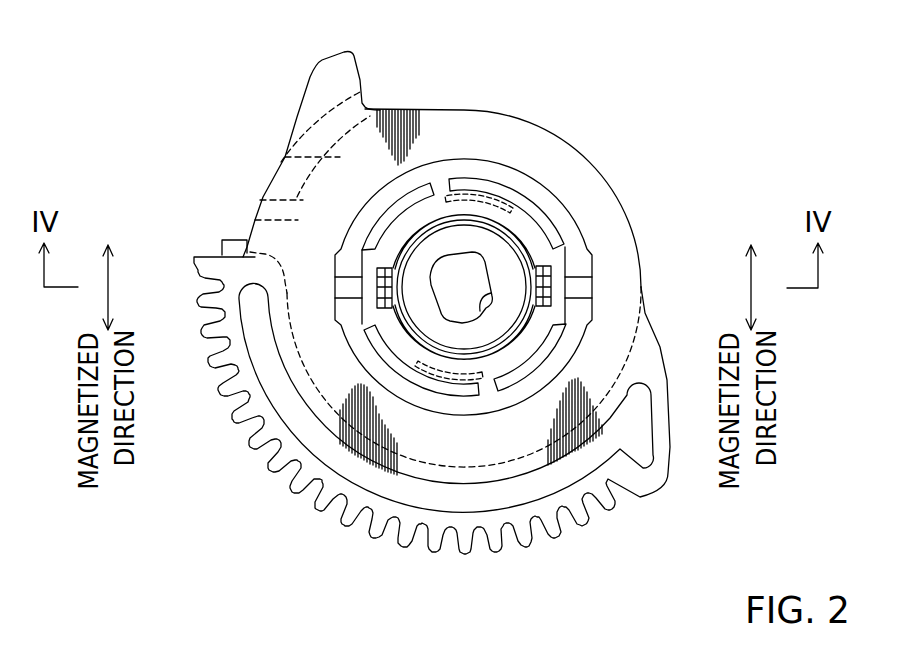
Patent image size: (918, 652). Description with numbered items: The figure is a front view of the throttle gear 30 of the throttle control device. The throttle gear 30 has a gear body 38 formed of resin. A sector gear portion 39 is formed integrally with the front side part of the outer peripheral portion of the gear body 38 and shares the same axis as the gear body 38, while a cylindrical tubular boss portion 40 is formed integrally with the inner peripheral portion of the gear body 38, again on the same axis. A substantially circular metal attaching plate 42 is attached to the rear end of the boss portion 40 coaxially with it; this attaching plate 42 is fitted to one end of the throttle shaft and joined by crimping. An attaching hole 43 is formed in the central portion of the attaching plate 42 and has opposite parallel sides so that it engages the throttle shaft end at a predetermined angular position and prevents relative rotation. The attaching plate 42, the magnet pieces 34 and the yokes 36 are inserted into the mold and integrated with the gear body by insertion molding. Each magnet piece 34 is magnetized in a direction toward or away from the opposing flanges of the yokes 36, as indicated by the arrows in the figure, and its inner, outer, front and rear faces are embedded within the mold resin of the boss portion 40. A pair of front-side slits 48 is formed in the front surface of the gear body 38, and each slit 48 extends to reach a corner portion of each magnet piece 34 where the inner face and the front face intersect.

The throttle gear 30 is at (560, 111).
The magnet piece 34 is at (335, 288).
The yoke 36 is at (484, 197).
The gear body 38 is at (472, 107).
The sector gear portion 39 is at (293, 487).
The boss portion 40 is at (512, 228).
The attaching plate 42 is at (420, 250).
The attaching hole 43 is at (478, 312).
The front-side slit 48 is at (548, 288).